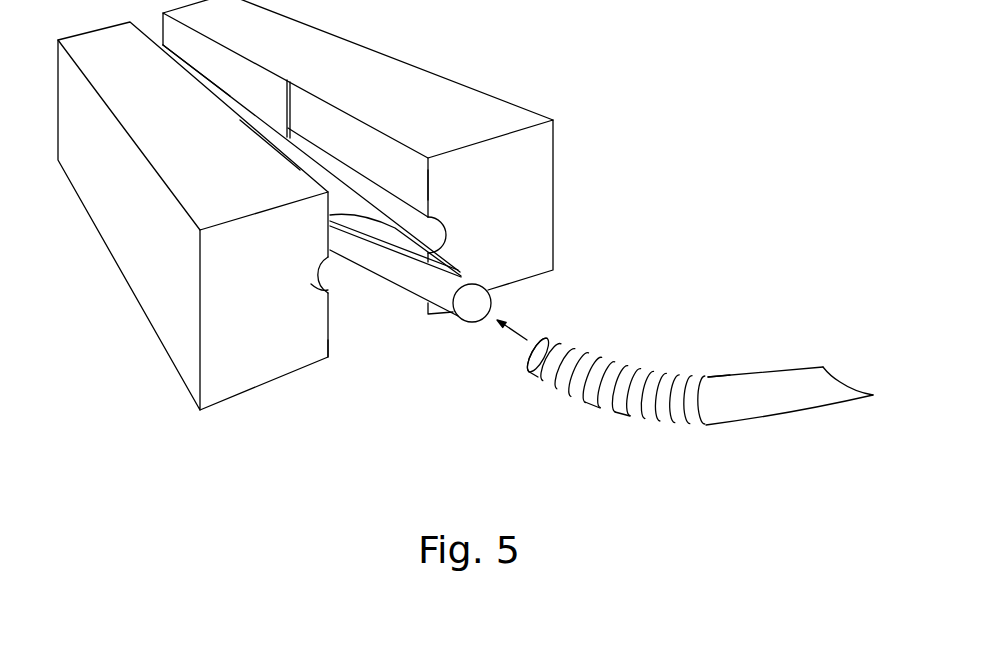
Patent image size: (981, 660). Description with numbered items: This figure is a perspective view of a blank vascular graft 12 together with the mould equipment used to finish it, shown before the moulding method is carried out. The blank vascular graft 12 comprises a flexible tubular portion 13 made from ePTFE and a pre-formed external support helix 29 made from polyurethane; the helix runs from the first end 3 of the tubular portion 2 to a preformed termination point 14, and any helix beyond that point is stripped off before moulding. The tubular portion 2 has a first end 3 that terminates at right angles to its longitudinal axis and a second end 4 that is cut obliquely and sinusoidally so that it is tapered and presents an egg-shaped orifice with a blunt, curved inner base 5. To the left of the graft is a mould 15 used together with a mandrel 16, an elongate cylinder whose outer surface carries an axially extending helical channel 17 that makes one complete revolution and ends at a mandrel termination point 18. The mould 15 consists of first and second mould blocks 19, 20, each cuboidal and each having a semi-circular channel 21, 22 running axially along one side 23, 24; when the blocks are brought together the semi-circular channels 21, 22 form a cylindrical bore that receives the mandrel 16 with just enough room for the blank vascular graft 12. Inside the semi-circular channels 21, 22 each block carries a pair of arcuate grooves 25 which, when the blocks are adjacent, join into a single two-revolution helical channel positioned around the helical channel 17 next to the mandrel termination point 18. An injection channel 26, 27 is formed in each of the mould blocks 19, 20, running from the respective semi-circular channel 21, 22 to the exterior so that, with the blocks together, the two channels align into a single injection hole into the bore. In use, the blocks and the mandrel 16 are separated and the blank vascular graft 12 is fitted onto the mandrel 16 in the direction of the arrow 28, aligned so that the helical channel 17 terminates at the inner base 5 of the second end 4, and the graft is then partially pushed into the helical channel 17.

The flexible tubular portion 2 is at (602, 357).
The first end 3 is at (538, 333).
The second end 4 is at (842, 380).
The inner base 5 is at (825, 367).
The blank vascular graft 12 is at (590, 398).
The flexible tubular portion 13 is at (530, 371).
The preformed termination point 14 is at (713, 377).
The mould 15 is at (432, 46).
The mandrel 16 is at (466, 315).
The helical channel 17 is at (388, 236).
The mandrel termination point 18 is at (288, 148).
The first mould block 19 is at (480, 100).
The second mould block 20 is at (137, 298).
The semi-circular channel 21 is at (447, 228).
The semi-circular channel 22 is at (318, 284).
The side 23 is at (426, 182).
The side 24 is at (333, 355).
The arcuate grooves 25 is at (280, 112).
The injection channel 26 is at (290, 80).
The injection channel 27 is at (213, 96).
The arrow 28 is at (515, 338).
The pre-formed external support helix 29 is at (617, 413).